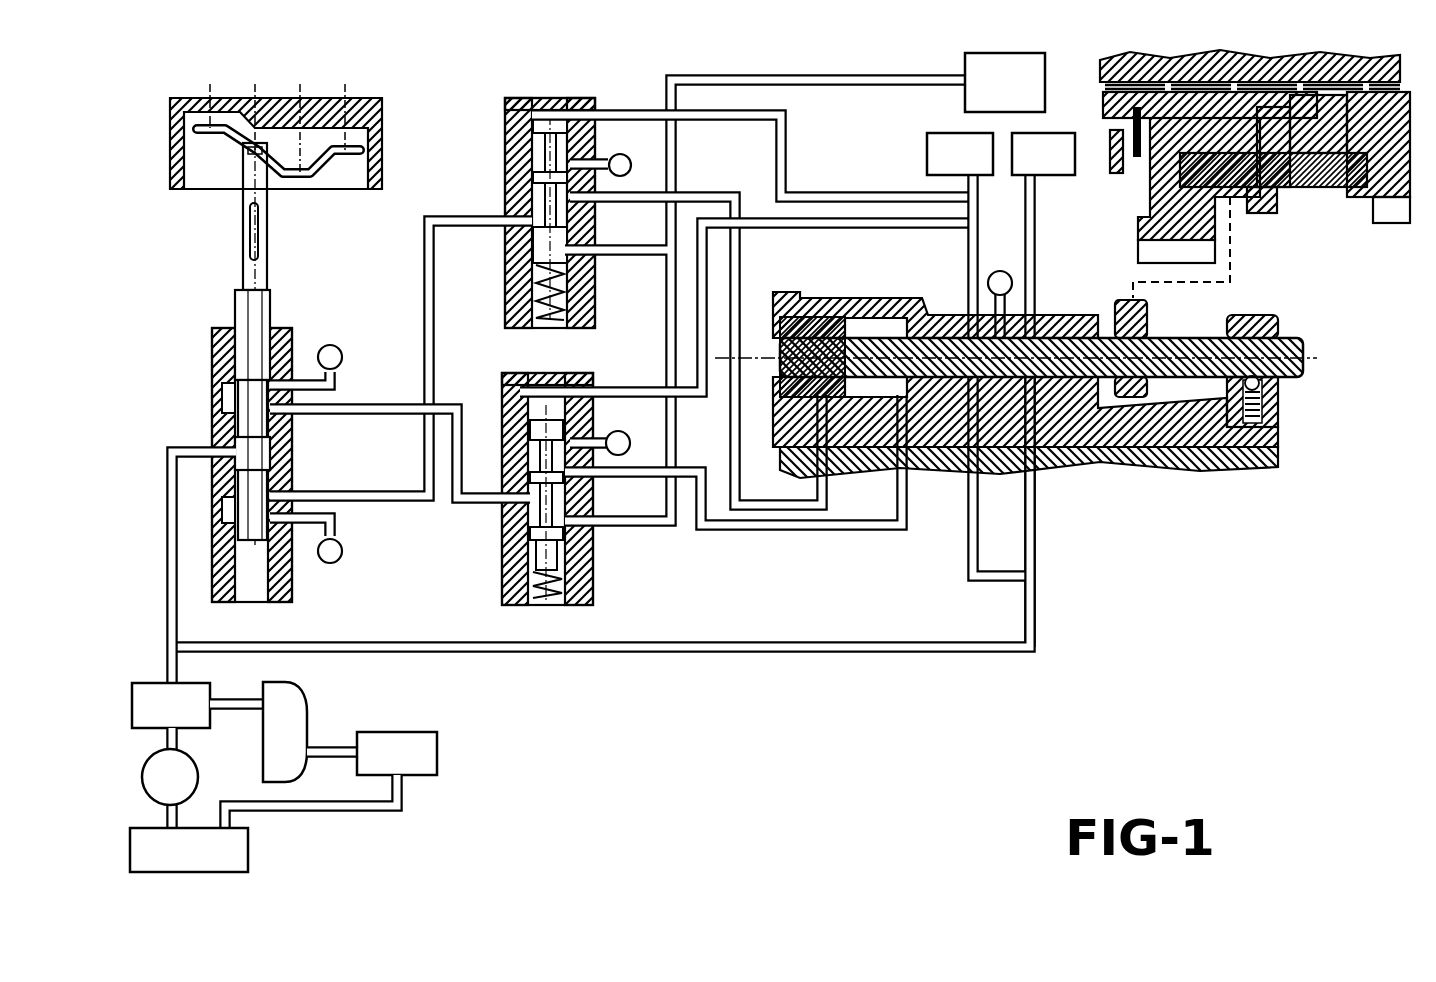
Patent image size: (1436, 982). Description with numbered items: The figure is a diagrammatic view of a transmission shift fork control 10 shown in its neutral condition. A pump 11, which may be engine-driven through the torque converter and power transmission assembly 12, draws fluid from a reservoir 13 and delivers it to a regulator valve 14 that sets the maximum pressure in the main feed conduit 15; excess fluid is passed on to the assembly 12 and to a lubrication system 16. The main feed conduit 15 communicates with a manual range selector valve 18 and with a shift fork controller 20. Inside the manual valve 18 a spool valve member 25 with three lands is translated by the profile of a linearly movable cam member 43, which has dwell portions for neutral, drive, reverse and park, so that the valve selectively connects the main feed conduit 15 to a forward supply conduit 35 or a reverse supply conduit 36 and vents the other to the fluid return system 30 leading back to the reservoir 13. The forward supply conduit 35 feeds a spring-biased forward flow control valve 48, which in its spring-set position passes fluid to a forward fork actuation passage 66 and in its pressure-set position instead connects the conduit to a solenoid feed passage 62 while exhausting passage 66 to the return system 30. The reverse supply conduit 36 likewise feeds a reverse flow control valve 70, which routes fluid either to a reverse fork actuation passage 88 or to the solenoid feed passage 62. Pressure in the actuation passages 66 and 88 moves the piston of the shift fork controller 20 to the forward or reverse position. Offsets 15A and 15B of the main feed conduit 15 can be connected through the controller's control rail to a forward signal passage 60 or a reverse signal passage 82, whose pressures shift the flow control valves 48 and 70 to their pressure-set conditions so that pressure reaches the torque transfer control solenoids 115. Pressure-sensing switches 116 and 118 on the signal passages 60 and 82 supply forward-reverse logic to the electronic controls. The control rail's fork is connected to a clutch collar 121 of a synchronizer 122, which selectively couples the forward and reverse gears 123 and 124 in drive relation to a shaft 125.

The transmission shift fork control 10 is at (618, 68).
The pump 11 is at (143, 764).
The torque converter and power transmission assembly 12 is at (309, 700).
The reservoir 13 is at (250, 853).
The regulator valve 14 is at (133, 681).
The main feed conduit 15 is at (166, 557).
The first offset of the main feed conduit 15A is at (856, 643).
The further offset branch of the main feed conduit 15B is at (964, 546).
The lubrication system 16 is at (439, 754).
The manual range selector valve 18 is at (210, 375).
The shift fork controller 20 is at (888, 296).
The spool valve member 25 is at (270, 268).
The fluid return system 30 is at (340, 352).
The forward supply conduit 35 is at (470, 228).
The reverse supply conduit 36 is at (470, 507).
The cam member 43 is at (168, 170).
The forward flow control valve 48 is at (503, 147).
The forward signal passage 60 is at (858, 195).
The solenoid feed passage 62 is at (860, 78).
The forward fork actuation passage 66 is at (722, 195).
The reverse flow control valve 70 is at (596, 566).
The reverse signal passage 82 is at (916, 230).
The reverse fork actuation passage 88 is at (790, 531).
The torque transfer control solenoids 115 is at (1005, 82).
The pressure-sensing switch 116 is at (1043, 390).
The pressure-sensing switch 118 is at (960, 235).
The clutch collar 121 is at (1265, 232).
The synchronizer 122 is at (1160, 58).
The gear 123 is at (1392, 205).
The gear 124 is at (1150, 238).
The shaft 125 is at (1108, 112).